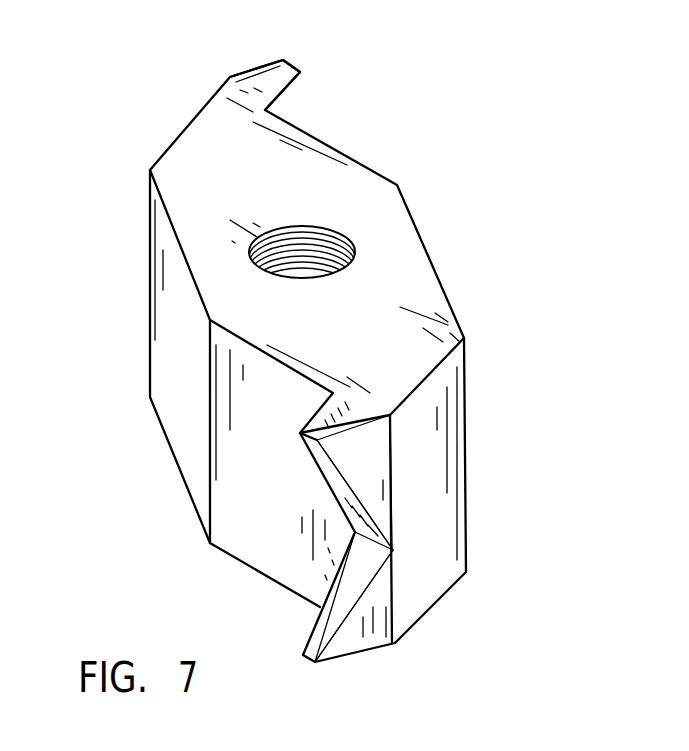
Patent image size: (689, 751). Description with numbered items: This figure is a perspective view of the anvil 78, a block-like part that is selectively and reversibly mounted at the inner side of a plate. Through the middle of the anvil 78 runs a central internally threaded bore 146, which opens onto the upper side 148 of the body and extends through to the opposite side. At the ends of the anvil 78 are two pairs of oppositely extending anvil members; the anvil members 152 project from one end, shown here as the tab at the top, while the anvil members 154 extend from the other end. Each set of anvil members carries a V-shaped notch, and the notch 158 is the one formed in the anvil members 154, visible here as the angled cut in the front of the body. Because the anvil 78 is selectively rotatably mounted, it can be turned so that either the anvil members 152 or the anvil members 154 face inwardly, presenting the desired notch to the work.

The adjustment nut / wedge block 78 is at (390, 149).
The side 148 is at (347, 205).
The central internally threaded bore 146 is at (347, 253).
The anvil members 152 is at (267, 62).
The anvil members 154 is at (375, 465).
The V-shaped notch 158 is at (367, 573).